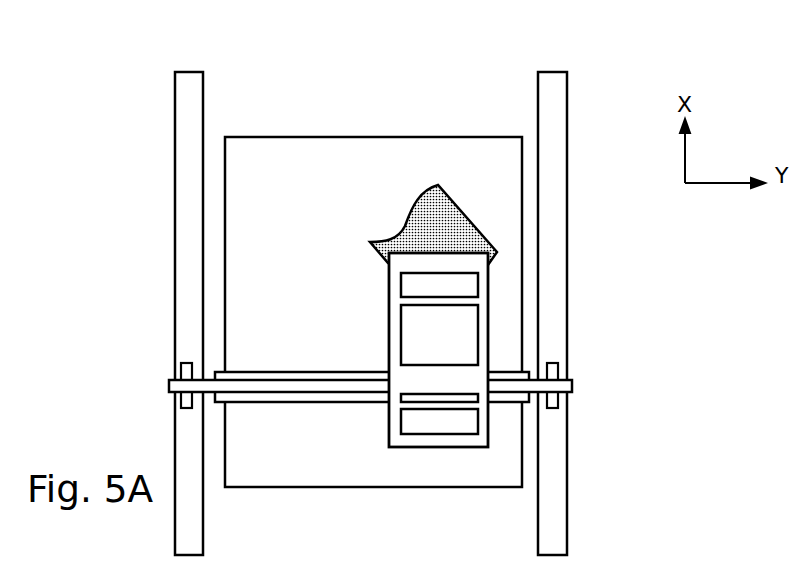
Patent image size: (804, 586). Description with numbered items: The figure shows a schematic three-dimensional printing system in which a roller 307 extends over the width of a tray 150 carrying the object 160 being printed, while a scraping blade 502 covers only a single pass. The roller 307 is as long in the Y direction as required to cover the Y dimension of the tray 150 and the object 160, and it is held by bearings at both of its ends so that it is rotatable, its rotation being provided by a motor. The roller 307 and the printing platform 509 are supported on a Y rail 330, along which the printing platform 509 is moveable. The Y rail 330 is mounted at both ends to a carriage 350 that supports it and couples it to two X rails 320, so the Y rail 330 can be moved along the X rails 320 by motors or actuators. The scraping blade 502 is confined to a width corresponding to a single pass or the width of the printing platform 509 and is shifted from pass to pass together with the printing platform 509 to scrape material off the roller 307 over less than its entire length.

The tray 150 is at (352, 471).
The object 160 is at (460, 205).
The roller 307 is at (520, 372).
The X rails 320 is at (185, 112).
The Y rail 330 is at (570, 385).
The carriage 350 is at (557, 368).
The scraping blade 502 is at (478, 398).
The printing platform 509 is at (489, 263).